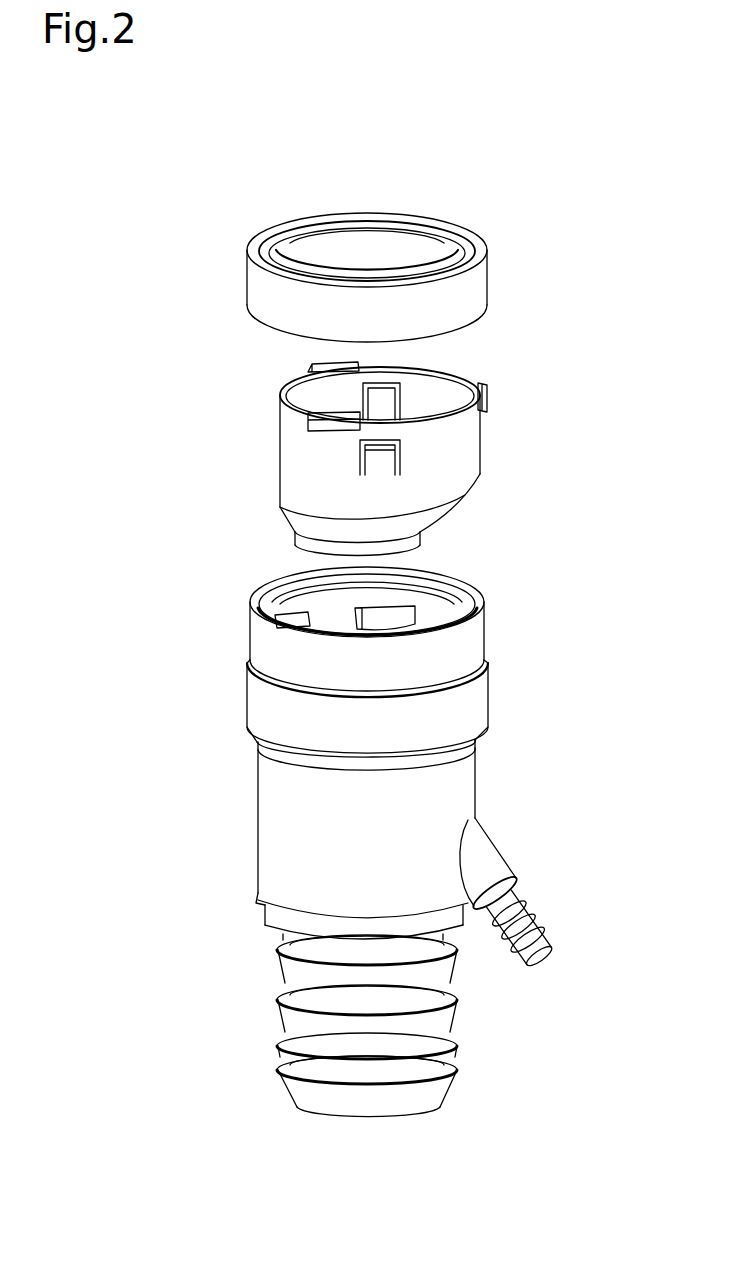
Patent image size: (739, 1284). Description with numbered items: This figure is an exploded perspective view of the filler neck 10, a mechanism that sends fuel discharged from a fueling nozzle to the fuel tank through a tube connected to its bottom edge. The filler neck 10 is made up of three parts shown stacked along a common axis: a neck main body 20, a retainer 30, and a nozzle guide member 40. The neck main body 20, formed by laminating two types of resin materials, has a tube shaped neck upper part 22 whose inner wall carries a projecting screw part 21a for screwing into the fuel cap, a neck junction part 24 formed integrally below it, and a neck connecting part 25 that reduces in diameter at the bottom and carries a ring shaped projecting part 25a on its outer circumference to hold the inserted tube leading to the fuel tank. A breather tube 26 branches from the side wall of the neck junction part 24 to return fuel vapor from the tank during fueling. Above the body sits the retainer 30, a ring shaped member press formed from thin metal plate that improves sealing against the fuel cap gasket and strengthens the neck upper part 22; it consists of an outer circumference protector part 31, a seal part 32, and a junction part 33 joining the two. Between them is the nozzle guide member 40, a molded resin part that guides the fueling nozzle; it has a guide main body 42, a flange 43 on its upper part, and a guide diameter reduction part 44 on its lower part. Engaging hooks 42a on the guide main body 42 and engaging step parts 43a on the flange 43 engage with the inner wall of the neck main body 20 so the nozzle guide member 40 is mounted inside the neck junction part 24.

The filler neck 10 is at (146, 221).
The neck main body 20 is at (492, 677).
The screw part 21a is at (413, 623).
The neck upper part 22 is at (489, 708).
The neck junction part 24 is at (476, 788).
The neck connecting part 25 is at (455, 1030).
The ring shaped projecting part 25a is at (457, 1003).
The breather tube 26 is at (500, 853).
The retainer 30 is at (563, 197).
The outer circumference protector part 31 is at (488, 292).
The seal part 32 is at (458, 238).
The junction part 33 is at (480, 254).
The nozzle guide member 40 is at (563, 360).
The guide main body 42 is at (482, 446).
The engaging hooks 42a is at (372, 393).
The flange 43 is at (490, 385).
The engaging step parts 43a is at (320, 366).
The guide diameter reduction part 44 is at (453, 500).